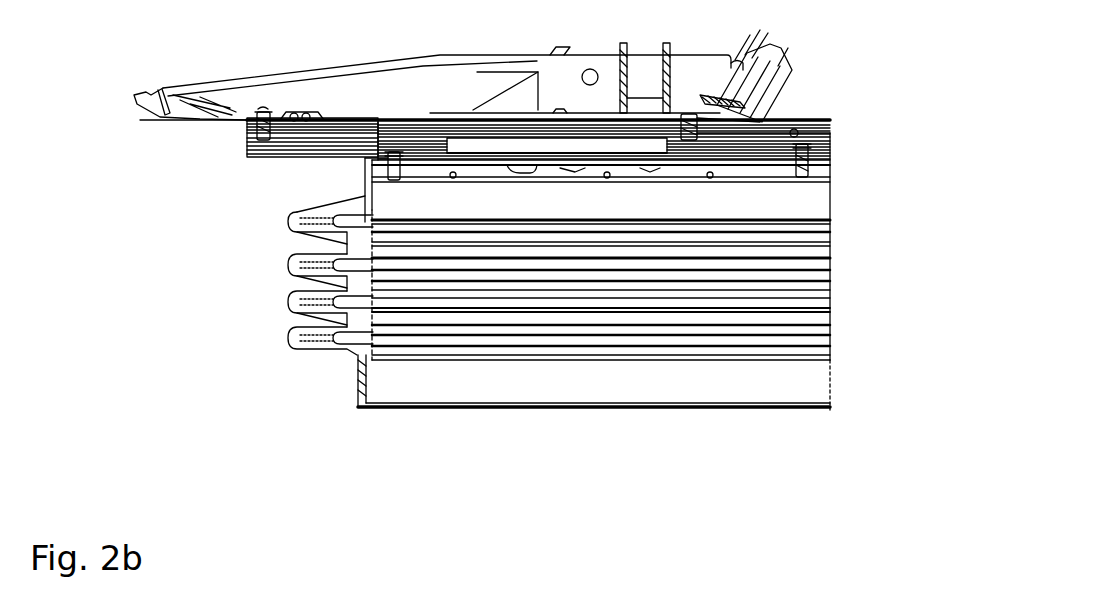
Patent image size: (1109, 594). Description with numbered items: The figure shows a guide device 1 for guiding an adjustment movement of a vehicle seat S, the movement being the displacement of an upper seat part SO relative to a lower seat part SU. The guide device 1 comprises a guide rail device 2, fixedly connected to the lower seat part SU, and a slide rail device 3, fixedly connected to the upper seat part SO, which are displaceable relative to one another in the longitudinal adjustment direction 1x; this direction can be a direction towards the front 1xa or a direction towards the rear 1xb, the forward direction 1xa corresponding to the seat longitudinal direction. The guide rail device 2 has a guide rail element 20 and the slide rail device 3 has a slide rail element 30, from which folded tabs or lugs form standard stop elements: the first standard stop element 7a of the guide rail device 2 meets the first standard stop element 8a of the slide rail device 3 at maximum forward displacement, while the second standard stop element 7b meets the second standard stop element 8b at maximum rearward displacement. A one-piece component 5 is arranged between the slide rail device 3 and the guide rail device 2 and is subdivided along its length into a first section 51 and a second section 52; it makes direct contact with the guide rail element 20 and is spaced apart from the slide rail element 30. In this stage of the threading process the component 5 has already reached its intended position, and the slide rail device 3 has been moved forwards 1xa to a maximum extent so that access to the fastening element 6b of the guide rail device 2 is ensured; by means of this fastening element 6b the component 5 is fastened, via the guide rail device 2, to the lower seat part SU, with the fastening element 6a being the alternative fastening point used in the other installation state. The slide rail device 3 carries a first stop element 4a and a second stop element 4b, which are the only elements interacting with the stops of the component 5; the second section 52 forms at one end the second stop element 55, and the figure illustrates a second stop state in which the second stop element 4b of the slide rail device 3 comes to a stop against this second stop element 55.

The guide device 1 is at (122, 169).
The guide rail device 2 is at (851, 167).
The slide rail device 3 is at (793, 101).
The first stop element 4a is at (263, 110).
The second stop element 4b is at (690, 113).
The one-piece component 5 is at (465, 136).
The fastening element 6a is at (389, 168).
The fastening element 6b is at (810, 170).
The first standard stop element 7a is at (388, 119).
The second standard stop element 7b is at (798, 130).
The first standard stop element 8a is at (428, 124).
The second standard stop element 8b is at (508, 119).
The guide rail element 20 is at (461, 162).
The slide rail element 30 is at (296, 111).
The first section 51 is at (784, 167).
The second section 52 is at (560, 147).
The second stop element 55 is at (664, 117).
The vehicle seat S is at (148, 69).
The upper seat part SO is at (120, 123).
The lower seat part SU is at (255, 396).
The longitudinal direction towards the front 1xa is at (647, 457).
The direction towards the rear 1xb is at (719, 457).
The longitudinal adjustment direction 1x is at (684, 498).